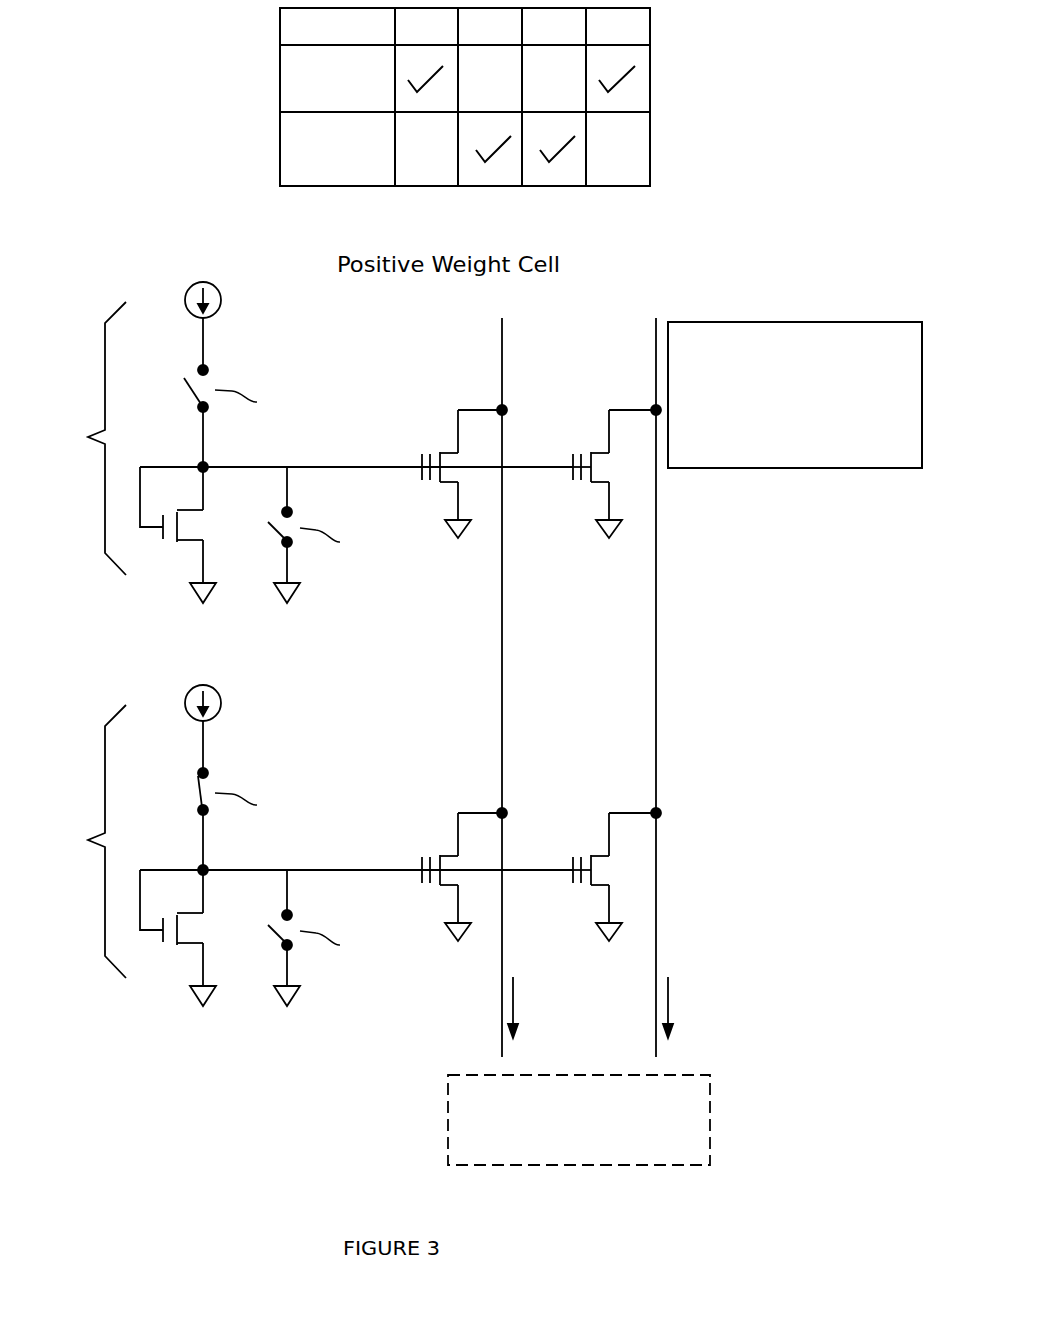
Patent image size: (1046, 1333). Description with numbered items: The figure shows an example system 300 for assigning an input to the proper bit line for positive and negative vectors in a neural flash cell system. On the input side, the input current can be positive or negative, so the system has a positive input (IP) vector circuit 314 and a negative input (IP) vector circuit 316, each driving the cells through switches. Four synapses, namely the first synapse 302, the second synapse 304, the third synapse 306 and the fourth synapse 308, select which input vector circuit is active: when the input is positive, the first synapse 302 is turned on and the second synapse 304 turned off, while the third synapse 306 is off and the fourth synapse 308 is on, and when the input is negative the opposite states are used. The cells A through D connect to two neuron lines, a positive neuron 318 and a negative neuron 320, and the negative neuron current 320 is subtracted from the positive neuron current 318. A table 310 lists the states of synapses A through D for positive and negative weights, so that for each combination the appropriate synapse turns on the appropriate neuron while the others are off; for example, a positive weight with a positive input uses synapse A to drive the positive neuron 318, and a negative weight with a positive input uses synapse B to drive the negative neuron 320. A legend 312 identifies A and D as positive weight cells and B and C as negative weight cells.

The system 300 is at (172, 1125).
The synapse S1 302 is at (183, 417).
The synapse S2 304 is at (263, 552).
The synapse S3 306 is at (183, 820).
The synapse S4 308 is at (263, 955).
The table 310 is at (667, 89).
The cell legend 312 is at (781, 314).
The positive input vector circuit 314 is at (50, 495).
The negative input vector circuit 316 is at (50, 898).
The positive neuron 318 is at (593, 634).
The negative neuron 320 is at (753, 634).